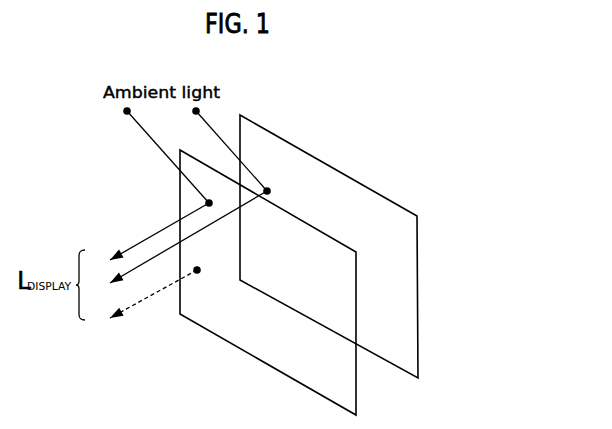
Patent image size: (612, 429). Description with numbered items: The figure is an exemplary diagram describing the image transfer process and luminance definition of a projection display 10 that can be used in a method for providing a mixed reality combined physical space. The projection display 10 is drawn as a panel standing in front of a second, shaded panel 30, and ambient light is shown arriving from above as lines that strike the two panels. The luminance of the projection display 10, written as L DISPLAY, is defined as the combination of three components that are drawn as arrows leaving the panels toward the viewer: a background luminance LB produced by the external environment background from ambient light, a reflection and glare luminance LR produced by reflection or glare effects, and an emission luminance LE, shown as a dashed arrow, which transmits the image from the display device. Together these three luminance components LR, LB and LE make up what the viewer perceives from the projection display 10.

The projection display 10 is at (356, 400).
The light control layer 30 is at (417, 238).
The reflection and glare luminance LR is at (149, 236).
The background luminance LB is at (178, 241).
The emission luminance LE is at (143, 301).